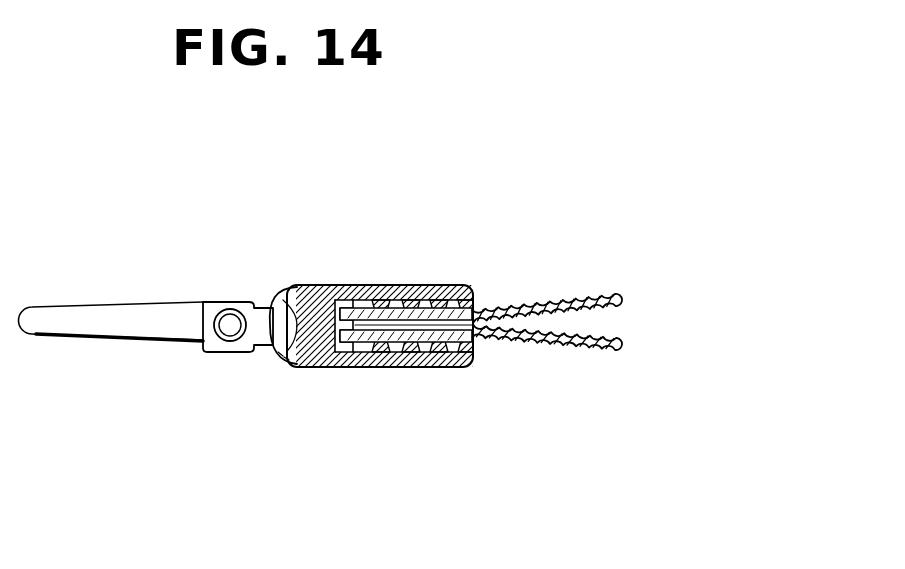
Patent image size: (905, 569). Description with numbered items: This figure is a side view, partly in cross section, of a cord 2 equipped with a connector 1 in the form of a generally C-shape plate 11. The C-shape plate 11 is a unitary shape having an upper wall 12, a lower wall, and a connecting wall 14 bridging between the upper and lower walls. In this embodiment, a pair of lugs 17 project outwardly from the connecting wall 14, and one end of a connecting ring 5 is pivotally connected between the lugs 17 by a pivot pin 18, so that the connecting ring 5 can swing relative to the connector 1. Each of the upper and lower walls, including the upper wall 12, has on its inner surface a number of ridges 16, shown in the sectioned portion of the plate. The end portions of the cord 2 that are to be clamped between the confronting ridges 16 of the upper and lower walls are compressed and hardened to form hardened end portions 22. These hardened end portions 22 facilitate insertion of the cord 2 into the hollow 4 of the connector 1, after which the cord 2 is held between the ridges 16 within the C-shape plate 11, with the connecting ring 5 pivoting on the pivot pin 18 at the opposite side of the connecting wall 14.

The connector 1 is at (368, 328).
The cord 2 is at (567, 300).
The hollow 4 is at (315, 366).
The connecting ring 5 is at (93, 318).
The C-shape plate 11 is at (390, 287).
The upper wall 12 is at (352, 287).
The connecting wall 14 is at (286, 290).
The ridges 16 is at (425, 367).
The lugs 17 is at (258, 328).
The pivot pin 18 is at (231, 326).
The hardened end portions 22 is at (440, 287).